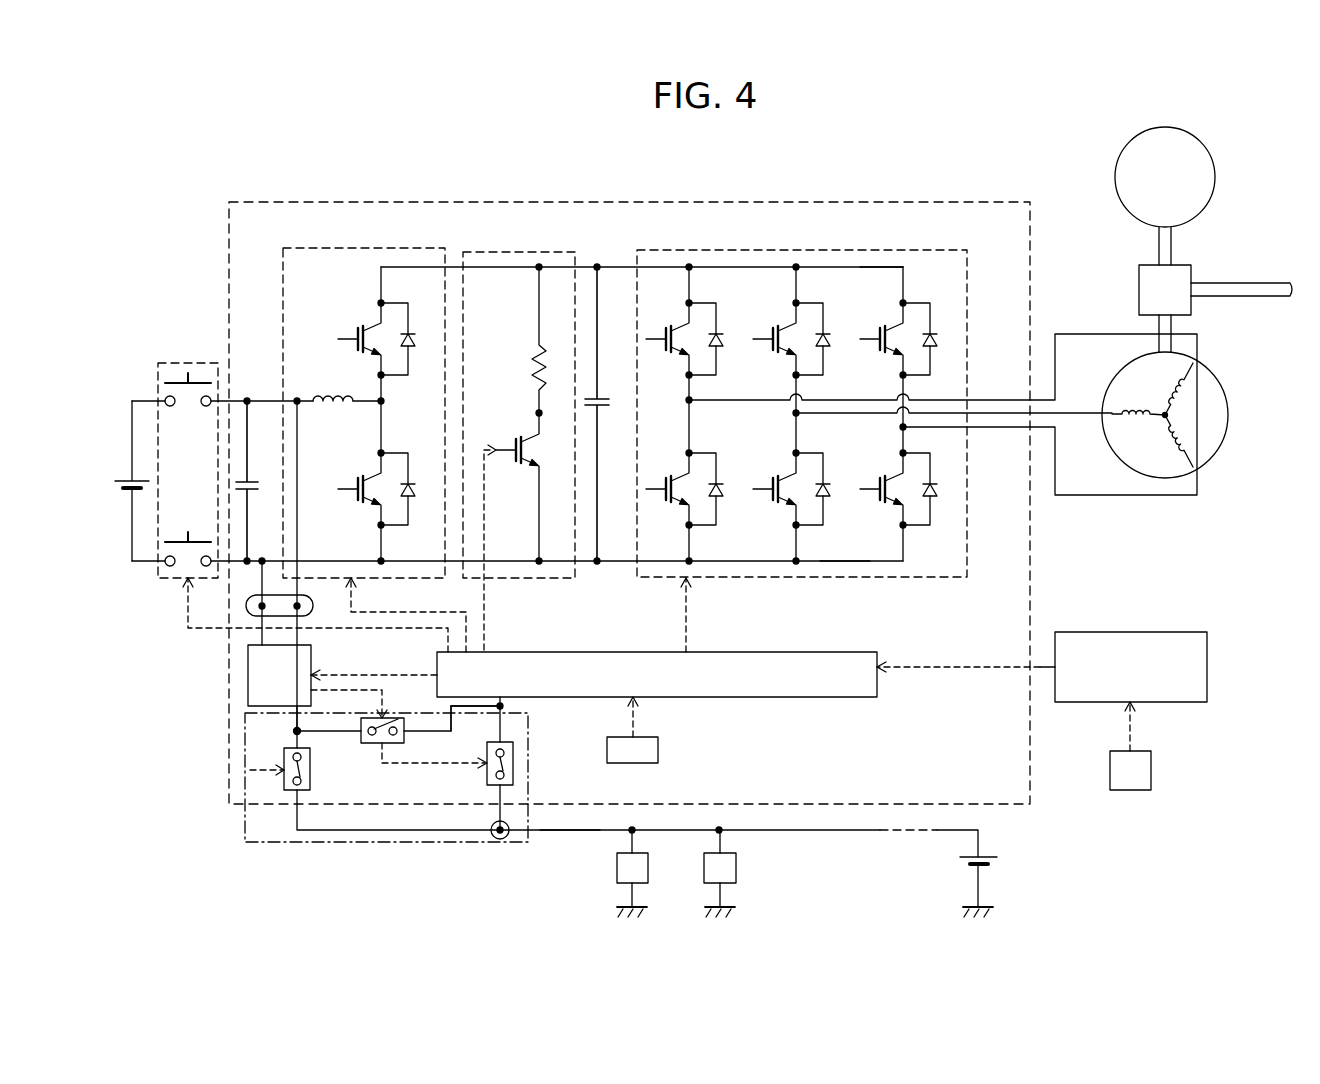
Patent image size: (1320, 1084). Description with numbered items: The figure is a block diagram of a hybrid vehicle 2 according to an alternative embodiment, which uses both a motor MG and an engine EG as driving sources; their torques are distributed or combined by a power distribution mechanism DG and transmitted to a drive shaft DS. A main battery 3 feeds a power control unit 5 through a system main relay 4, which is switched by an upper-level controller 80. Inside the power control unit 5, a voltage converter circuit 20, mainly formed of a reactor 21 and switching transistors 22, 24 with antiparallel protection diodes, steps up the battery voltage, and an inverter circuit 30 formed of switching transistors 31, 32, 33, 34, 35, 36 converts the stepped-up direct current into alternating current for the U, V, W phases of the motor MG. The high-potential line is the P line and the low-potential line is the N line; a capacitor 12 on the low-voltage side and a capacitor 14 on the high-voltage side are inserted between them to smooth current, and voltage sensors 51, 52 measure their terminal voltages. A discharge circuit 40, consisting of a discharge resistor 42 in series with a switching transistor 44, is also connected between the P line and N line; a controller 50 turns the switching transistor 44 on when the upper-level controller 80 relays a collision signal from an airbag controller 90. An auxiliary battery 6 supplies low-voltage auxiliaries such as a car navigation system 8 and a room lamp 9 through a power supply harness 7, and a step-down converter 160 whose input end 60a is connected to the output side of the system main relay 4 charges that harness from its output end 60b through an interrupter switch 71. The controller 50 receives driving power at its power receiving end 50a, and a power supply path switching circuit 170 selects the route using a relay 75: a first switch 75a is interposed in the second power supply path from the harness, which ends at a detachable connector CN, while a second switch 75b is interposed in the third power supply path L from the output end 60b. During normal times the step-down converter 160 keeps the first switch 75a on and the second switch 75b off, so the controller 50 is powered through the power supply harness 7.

The hybrid vehicle 2 is at (625, 465).
The main battery 3 is at (132, 475).
The system main relay 4 is at (186, 362).
The power control unit 5 is at (918, 202).
The auxiliary battery 6 is at (990, 850).
The power supply harness 7 is at (565, 833).
The car navigation system 8 is at (648, 868).
The room lamp 9 is at (736, 868).
The capacitor 12 is at (247, 480).
The capacitor 14 is at (600, 397).
The voltage converter circuit 20 is at (375, 248).
The reactor 21 is at (330, 395).
The switching transistor 22 is at (355, 328).
The switching transistor 24 is at (354, 479).
The inverter circuit 30 is at (813, 250).
The switching transistor 31 is at (664, 329).
The switching transistor 32 is at (664, 479).
The switching transistor 33 is at (771, 330).
The switching transistor 34 is at (771, 480).
The switching transistor 35 is at (878, 330).
The switching transistor 36 is at (878, 480).
The discharge circuit 40 is at (528, 250).
The discharge resistor 42 is at (537, 345).
The switching transistor 44 is at (514, 439).
The controller 50 is at (800, 697).
The power receiving end 50a is at (500, 706).
The voltage sensor 51 is at (683, 730).
The voltage sensor 52 is at (658, 750).
The input end 60a is at (246, 606).
The output end 60b is at (297, 731).
The interrupter switch 71 is at (284, 780).
The relay 75 is at (467, 815).
The first switch 75a is at (497, 787).
The second switch 75b is at (374, 745).
The upper-level controller 80 is at (1178, 632).
The airbag controller 90 is at (1151, 770).
The step-down converter 160 is at (248, 677).
The power supply path switching circuit 170 is at (245, 833).
The P line P is at (879, 267).
The N line N is at (840, 563).
The third power supply path L is at (458, 732).
The connector CN is at (489, 846).
The motor MG is at (1174, 394).
The engine EG is at (1215, 175).
The power distribution mechanism DG is at (1191, 275).
The drive shaft DS is at (1265, 283).
The U phase U is at (1186, 389).
The V phase V is at (1138, 396).
The W phase W is at (1171, 441).